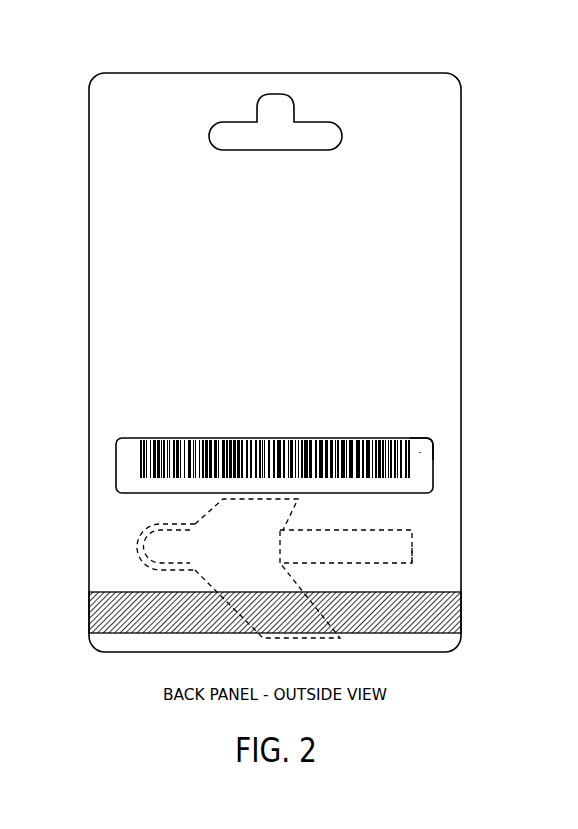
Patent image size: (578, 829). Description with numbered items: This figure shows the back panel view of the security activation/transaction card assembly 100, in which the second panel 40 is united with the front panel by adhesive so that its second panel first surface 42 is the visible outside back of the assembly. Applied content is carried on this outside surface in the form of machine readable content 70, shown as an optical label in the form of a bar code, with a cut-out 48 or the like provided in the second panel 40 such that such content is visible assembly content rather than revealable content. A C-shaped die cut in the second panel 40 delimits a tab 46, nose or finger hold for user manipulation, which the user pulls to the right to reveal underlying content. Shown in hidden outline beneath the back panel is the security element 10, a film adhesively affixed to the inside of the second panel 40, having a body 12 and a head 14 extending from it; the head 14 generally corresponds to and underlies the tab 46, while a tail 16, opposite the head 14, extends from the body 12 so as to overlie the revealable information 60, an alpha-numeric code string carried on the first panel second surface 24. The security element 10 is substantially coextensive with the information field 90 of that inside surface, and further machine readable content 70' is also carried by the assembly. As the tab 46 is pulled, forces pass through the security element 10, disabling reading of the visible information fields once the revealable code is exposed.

The security activation/transaction card assembly 100 is at (469, 91).
The second panel 40 is at (447, 280).
The second panel first surface 42 is at (400, 198).
The first panel second surface 24 is at (131, 456).
The machine readable content 70 is at (275, 440).
The cut-out 48 is at (414, 438).
The information field 90 is at (420, 452).
The security element 10 is at (276, 509).
The tab 46 is at (150, 527).
The head 14 is at (150, 546).
The revealable information 60 is at (363, 546).
The body 12 is at (255, 576).
The tail 16 is at (402, 552).
The further machine readable content 70' is at (301, 612).